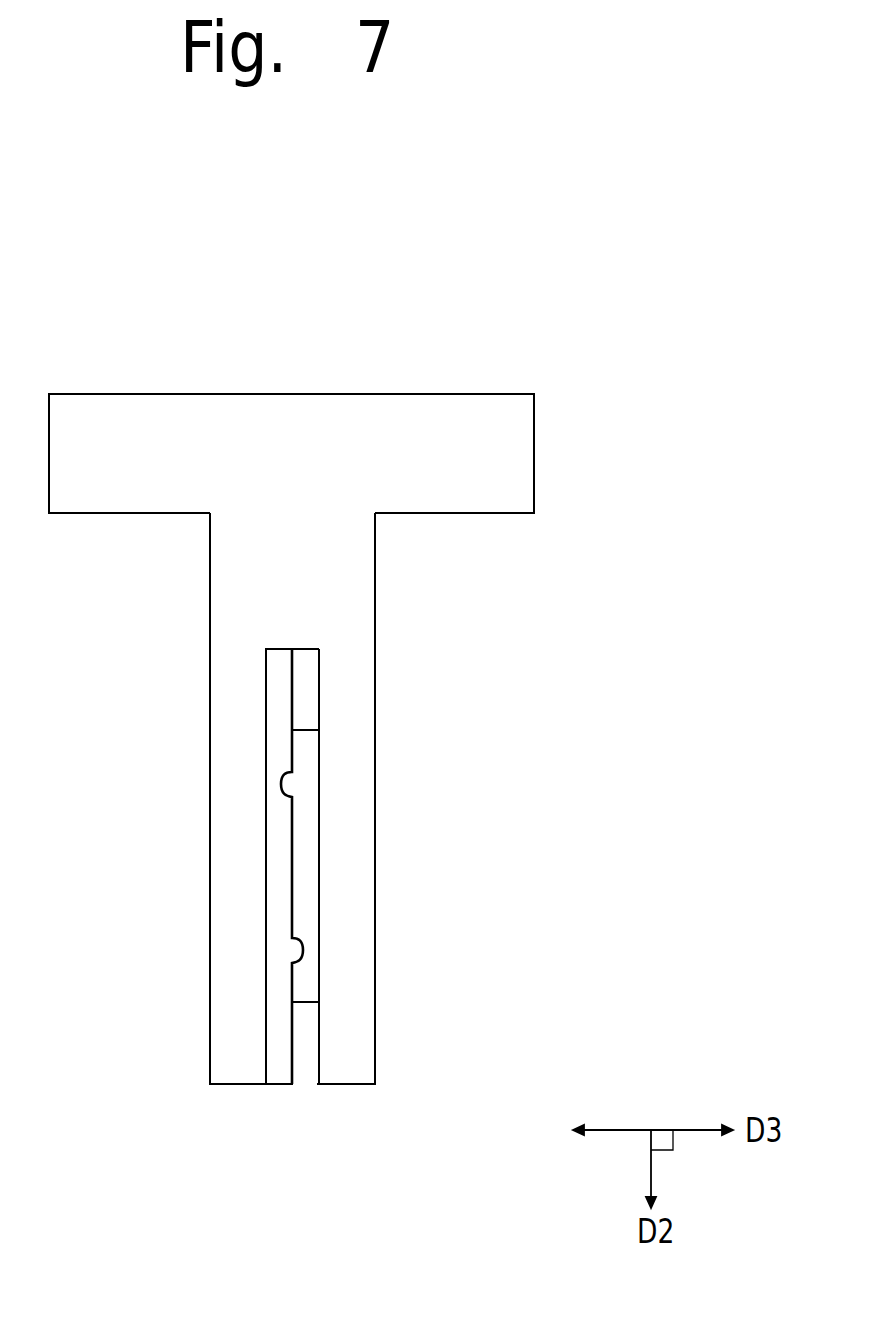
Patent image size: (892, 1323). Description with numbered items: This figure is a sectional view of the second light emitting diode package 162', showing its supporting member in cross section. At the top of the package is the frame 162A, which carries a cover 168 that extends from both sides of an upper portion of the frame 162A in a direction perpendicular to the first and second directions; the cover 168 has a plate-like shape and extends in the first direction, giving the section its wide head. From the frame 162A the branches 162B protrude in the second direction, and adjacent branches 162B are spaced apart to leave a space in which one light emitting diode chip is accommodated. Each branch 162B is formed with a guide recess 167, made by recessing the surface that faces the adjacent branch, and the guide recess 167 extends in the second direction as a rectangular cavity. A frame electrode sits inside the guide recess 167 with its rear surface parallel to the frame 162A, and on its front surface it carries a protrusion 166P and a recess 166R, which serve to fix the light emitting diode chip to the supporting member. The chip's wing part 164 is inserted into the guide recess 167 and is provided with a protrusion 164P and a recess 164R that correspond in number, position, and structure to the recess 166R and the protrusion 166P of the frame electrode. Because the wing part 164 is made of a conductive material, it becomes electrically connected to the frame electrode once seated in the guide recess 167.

The second light emitting diode package 162' is at (353, 665).
The cover 168 is at (509, 460).
The frame 162A is at (350, 585).
The branch 162B is at (350, 832).
The wing part 164 is at (305, 888).
The protrusion of wing part 164P is at (293, 780).
The recess of wing part 164R is at (300, 950).
The recess of frame electrode 166R is at (284, 779).
The protrusion of frame electrode 166P is at (290, 948).
The guide recess 167 is at (280, 867).